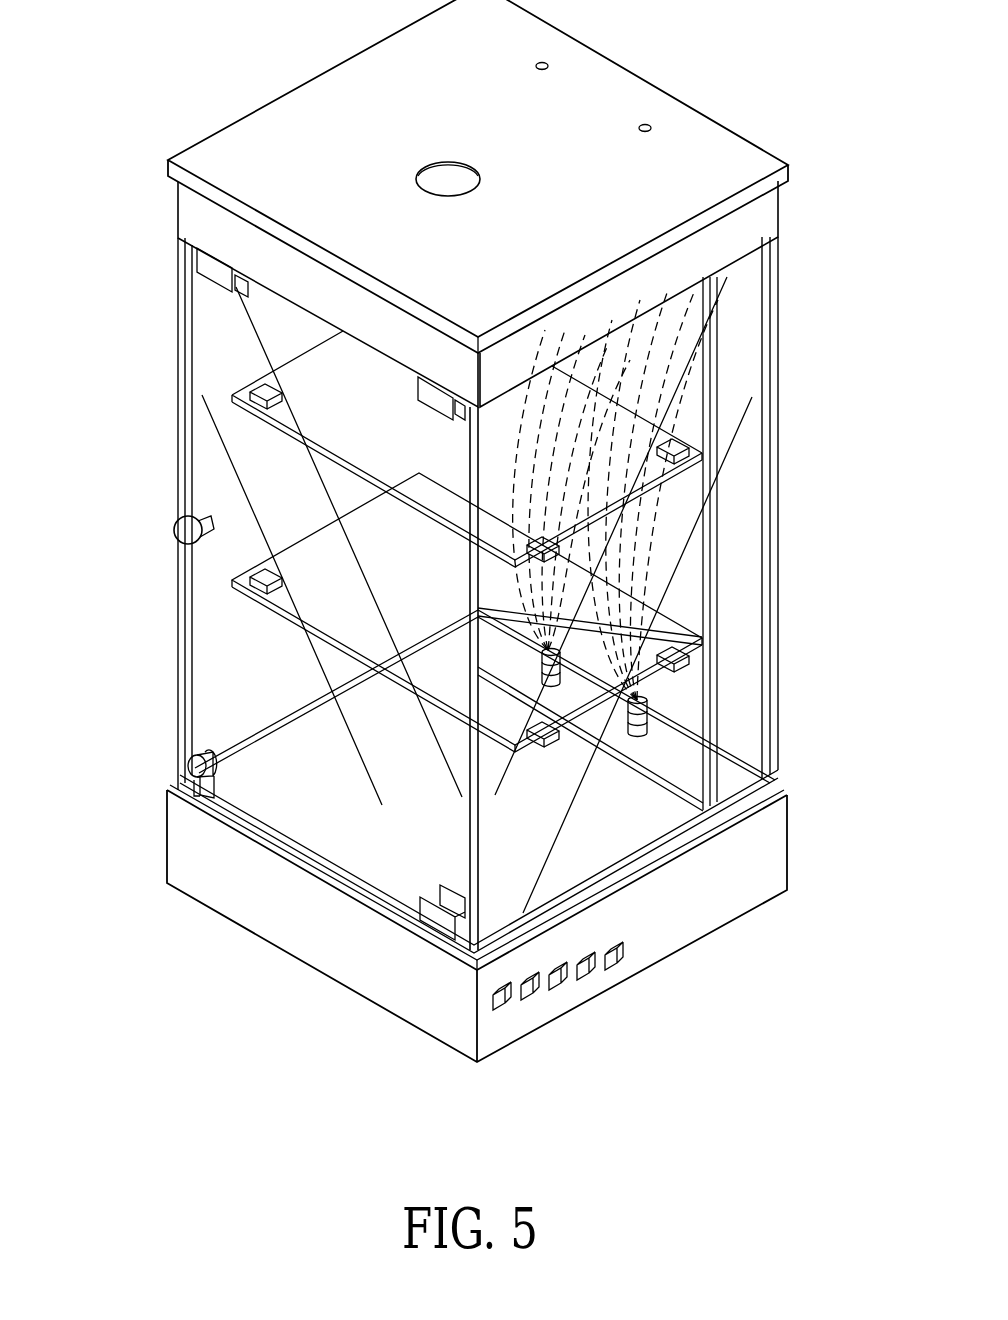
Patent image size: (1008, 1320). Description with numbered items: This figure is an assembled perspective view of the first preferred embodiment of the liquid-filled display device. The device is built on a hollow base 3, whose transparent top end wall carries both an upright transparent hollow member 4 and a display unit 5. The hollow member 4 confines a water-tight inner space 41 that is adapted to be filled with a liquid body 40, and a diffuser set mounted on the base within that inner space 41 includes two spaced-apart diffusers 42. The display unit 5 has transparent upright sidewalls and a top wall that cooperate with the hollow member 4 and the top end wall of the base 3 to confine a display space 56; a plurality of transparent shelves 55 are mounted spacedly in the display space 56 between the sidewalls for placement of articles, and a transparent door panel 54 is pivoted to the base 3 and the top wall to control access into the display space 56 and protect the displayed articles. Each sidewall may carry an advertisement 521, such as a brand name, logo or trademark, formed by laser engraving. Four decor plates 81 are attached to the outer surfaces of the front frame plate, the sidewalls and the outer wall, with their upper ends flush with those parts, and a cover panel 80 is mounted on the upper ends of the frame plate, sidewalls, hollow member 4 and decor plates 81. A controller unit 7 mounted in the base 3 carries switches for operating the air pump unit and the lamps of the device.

The hollow base 3 is at (318, 950).
The upright transparent hollow member 4 is at (750, 482).
The display unit 5 is at (166, 497).
The controller unit 7 is at (556, 983).
The liquid body 40 is at (672, 548).
The inner space 41 is at (750, 380).
The diffusers 42 is at (630, 734).
The transparent door panel 54 is at (205, 640).
The transparent shelves 55 is at (262, 390).
The display space 56 is at (240, 688).
The cover panel 80 is at (625, 86).
The decor plates 81 is at (190, 218).
The advertisement 521 is at (748, 306).